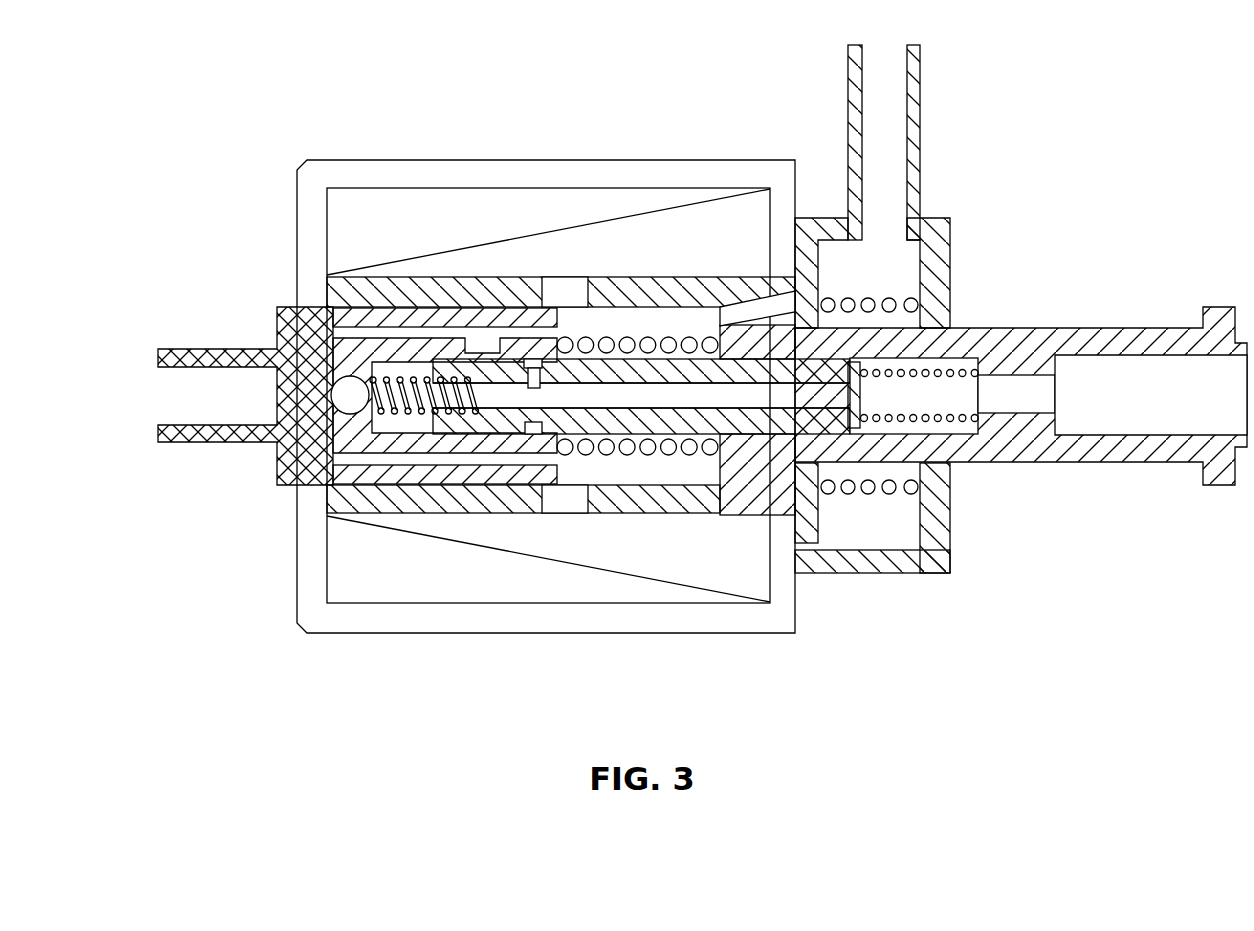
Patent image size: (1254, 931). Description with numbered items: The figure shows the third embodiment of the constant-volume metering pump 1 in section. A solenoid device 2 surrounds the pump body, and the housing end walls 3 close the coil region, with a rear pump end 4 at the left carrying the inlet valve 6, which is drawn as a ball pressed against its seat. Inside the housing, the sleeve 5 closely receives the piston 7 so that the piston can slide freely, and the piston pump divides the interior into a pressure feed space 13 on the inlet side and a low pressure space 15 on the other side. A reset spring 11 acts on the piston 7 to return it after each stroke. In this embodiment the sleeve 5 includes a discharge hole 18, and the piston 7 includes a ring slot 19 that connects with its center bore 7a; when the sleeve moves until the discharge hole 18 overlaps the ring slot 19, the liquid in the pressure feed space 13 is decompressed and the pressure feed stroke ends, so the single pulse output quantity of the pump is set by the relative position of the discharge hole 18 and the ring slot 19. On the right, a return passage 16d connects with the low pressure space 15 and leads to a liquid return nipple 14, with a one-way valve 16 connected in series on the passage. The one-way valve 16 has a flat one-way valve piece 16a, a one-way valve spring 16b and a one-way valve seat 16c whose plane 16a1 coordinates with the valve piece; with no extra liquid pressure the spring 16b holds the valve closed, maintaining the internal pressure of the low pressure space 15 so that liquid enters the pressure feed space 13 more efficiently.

The constant-volume metering pump 1 is at (253, 280).
The solenoid device 2 is at (447, 638).
The housing end walls 3 is at (327, 277).
The rear pump end 4 is at (297, 353).
The sleeve 5 is at (413, 425).
The inlet valve 6 is at (325, 394).
The piston 7 is at (619, 425).
The center bore 7a is at (727, 395).
The reset spring 11 is at (628, 343).
The pressure feed space 13 is at (483, 393).
The liquid return nipple 14 is at (887, 133).
The low pressure space 15 is at (569, 480).
The one-way valve 16 is at (937, 290).
The one-way valve piece 16a is at (810, 505).
The plane 16a1 is at (747, 310).
The one-way valve spring 16b is at (889, 304).
The one-way valve seat 16c is at (862, 424).
The return passage 16d is at (800, 333).
The discharge hole 18 is at (478, 347).
The ring slot 19 is at (533, 355).